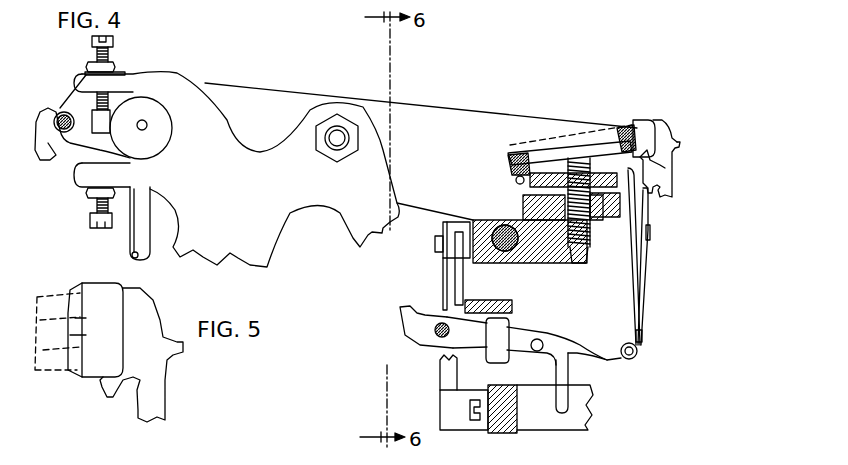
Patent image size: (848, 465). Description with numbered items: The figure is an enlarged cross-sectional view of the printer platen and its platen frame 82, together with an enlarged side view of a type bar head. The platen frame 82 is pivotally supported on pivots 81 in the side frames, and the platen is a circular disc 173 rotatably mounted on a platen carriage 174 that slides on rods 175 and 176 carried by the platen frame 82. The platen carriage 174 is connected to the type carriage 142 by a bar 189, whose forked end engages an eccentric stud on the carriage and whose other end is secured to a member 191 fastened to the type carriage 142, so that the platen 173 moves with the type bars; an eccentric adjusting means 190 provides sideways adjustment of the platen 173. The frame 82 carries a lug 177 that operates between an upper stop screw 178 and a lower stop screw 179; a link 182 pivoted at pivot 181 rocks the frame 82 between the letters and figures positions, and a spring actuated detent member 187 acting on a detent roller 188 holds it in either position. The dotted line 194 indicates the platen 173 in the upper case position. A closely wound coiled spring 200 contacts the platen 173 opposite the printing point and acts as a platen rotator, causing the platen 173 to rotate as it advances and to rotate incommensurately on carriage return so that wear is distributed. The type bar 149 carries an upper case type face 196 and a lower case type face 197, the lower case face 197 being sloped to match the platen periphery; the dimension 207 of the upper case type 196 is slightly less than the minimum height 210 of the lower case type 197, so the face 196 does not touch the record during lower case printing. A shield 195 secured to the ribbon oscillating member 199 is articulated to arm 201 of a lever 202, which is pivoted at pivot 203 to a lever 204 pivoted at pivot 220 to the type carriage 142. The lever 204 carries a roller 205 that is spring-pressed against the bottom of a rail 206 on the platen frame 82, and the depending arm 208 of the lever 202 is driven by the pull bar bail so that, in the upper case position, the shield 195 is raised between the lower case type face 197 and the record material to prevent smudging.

In FIG. 4, the pivot 81 is at (332, 120).
In FIG. 4, the platen frame 82 is at (422, 86).
In FIG. 4, the type carriage 142 is at (574, 426).
In FIG. 4, the type bar 149 is at (667, 178).
In FIG. 5, the type bar 149 is at (160, 398).
In FIG. 4, the platen 173 is at (512, 155).
In FIG. 5, the platen 173 is at (54, 331).
In FIG. 4, the platen carriage 174 is at (523, 208).
In FIG. 4, the rod 175 is at (500, 215).
In FIG. 4, the rod 176 is at (617, 208).
In FIG. 4, the lug 177 is at (110, 123).
In FIG. 4, the upper stop screw 178 is at (95, 105).
In FIG. 4, the lower stop screw 179 is at (97, 208).
In FIG. 4, the pivot 181 is at (146, 122).
In FIG. 4, the link 182 is at (135, 255).
In FIG. 4, the detent member 187 is at (38, 157).
In FIG. 4, the detent roller 188 is at (68, 136).
In FIG. 4, the bar 189 is at (457, 280).
In FIG. 4, the eccentric adjusting means 190 is at (442, 233).
In FIG. 4, the member 191 is at (440, 373).
In FIG. 4, the dotted line 194 is at (579, 135).
In FIG. 4, the shield 195 is at (640, 230).
In FIG. 4, the upper case type face 196 is at (636, 120).
In FIG. 5, the upper case type face 196 is at (80, 297).
In FIG. 4, the lower case type face 197 is at (640, 148).
In FIG. 5, the lower case type face 197 is at (73, 370).
In FIG. 4, the ribbon oscillating member 199 is at (647, 268).
In FIG. 4, the coiled spring 200 is at (512, 178).
In FIG. 4, the arm 201 is at (630, 366).
In FIG. 4, the lever 202 is at (576, 357).
In FIG. 4, the pivot 203 is at (538, 343).
In FIG. 4, the lever 204 is at (523, 350).
In FIG. 4, the roller 205 is at (503, 325).
In FIG. 4, the rail 206 is at (497, 308).
In FIG. 5, the dimension 207 is at (71, 322).
In FIG. 4, the depending arm 208 is at (577, 415).
In FIG. 5, the minimum height 210 is at (65, 336).
In FIG. 4, the pivot 220 is at (433, 330).